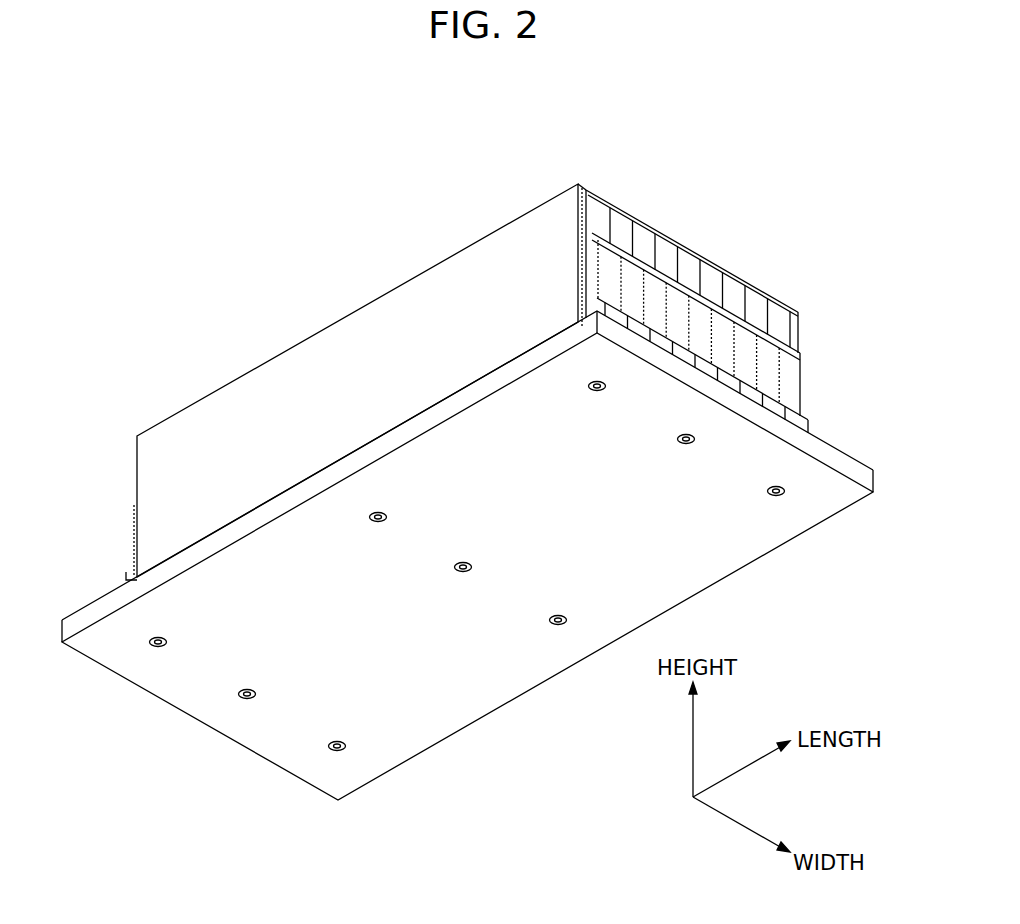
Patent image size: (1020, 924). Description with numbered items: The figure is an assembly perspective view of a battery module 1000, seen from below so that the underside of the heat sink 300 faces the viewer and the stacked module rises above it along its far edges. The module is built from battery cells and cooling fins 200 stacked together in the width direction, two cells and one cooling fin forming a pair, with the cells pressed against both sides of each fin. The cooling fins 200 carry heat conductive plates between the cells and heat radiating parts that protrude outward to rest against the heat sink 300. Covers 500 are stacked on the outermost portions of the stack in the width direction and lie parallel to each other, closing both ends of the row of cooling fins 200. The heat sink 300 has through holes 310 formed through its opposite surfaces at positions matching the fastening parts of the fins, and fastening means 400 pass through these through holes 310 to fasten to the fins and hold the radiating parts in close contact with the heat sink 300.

The battery module 1000 is at (231, 271).
The cooling fin 200 is at (596, 190).
The heat sink 300 is at (467, 729).
The through hole 310 is at (561, 623).
The fastening means 400 is at (556, 621).
The cover 500 is at (547, 200).